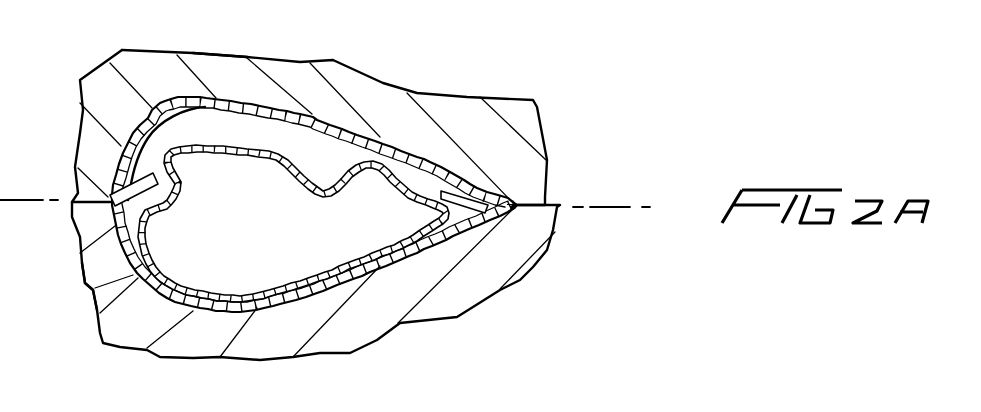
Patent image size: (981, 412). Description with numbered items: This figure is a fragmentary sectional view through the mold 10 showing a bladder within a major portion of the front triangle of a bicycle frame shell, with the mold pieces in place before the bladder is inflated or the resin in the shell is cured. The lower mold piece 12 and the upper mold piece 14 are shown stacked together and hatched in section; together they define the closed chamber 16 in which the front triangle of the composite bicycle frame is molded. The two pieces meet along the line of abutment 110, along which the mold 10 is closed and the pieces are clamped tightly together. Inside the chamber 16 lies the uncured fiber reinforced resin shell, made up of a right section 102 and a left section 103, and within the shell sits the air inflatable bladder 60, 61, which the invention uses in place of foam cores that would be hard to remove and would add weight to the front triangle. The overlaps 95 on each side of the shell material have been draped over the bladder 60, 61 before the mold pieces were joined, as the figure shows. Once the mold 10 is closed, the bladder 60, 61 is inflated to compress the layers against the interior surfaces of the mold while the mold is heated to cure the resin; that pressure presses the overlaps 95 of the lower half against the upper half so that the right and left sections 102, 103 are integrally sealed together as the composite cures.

The mold 10 is at (393, 67).
The lower mold piece 12 is at (393, 317).
The upper mold piece 14 is at (335, 68).
The closed chamber 16 is at (260, 32).
The air inflatable bladder 60 is at (288, 163).
The air inflatable bladder 61 is at (223, 146).
The overlap 95 is at (140, 185).
The right section of frame shell 102 is at (87, 290).
The left section of frame shell 103 is at (383, 133).
The line of abutment 110 is at (591, 207).